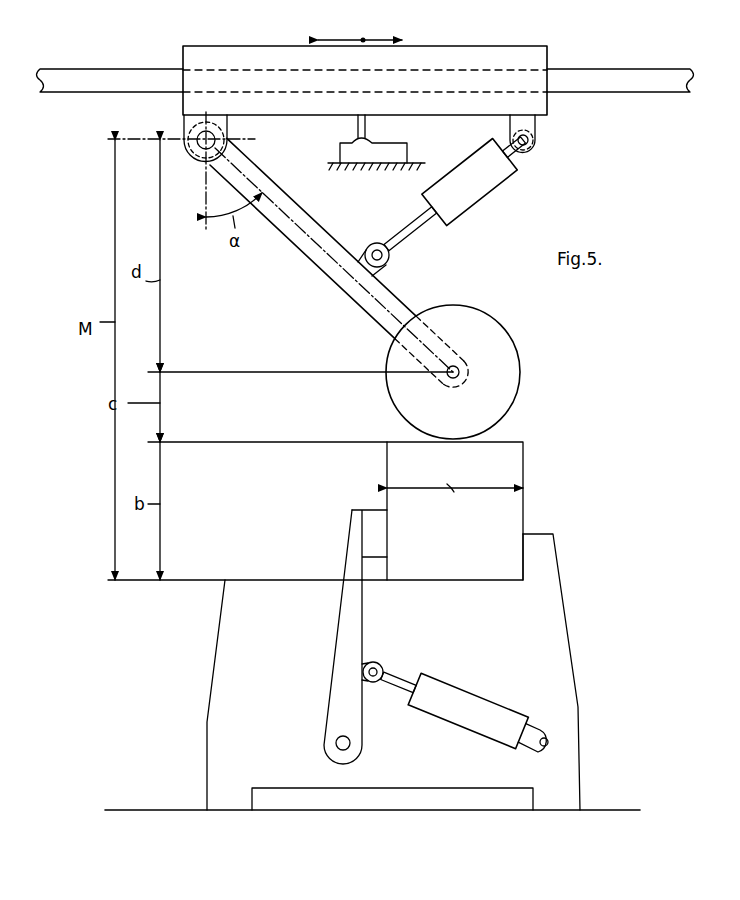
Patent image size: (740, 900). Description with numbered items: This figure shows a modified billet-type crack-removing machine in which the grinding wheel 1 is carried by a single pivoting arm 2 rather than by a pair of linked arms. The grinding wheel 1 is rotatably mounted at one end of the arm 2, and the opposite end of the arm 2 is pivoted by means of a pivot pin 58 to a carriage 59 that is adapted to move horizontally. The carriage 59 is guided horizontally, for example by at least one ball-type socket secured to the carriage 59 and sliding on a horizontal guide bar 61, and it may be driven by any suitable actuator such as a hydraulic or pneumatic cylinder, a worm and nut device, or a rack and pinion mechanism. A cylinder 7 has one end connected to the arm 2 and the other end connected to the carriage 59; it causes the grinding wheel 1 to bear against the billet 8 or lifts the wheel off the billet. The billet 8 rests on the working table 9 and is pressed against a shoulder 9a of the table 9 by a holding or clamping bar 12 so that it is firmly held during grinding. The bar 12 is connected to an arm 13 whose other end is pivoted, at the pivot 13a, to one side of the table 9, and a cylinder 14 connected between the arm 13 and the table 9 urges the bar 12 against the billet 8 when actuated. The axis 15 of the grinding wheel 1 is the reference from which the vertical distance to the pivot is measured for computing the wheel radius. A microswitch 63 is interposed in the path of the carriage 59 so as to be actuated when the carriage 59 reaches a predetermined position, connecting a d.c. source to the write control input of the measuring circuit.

The grinding wheel 1 is at (518, 365).
The pivoting arm 2 is at (317, 261).
The cylinder 7 is at (487, 186).
The billet 8 is at (517, 458).
The working table 9 is at (215, 687).
The shoulder 9a is at (520, 563).
The holding or clamping bar 12 is at (372, 518).
The arm 13 is at (340, 637).
The lever pivot 13a is at (336, 742).
The cylinder 14 is at (470, 723).
The axis of grinding wheel 15 is at (449, 381).
The pivot pin 58 is at (196, 137).
The carriage 59 is at (536, 53).
The horizontal guide bar 61 is at (116, 72).
The microswitch 63 is at (400, 153).